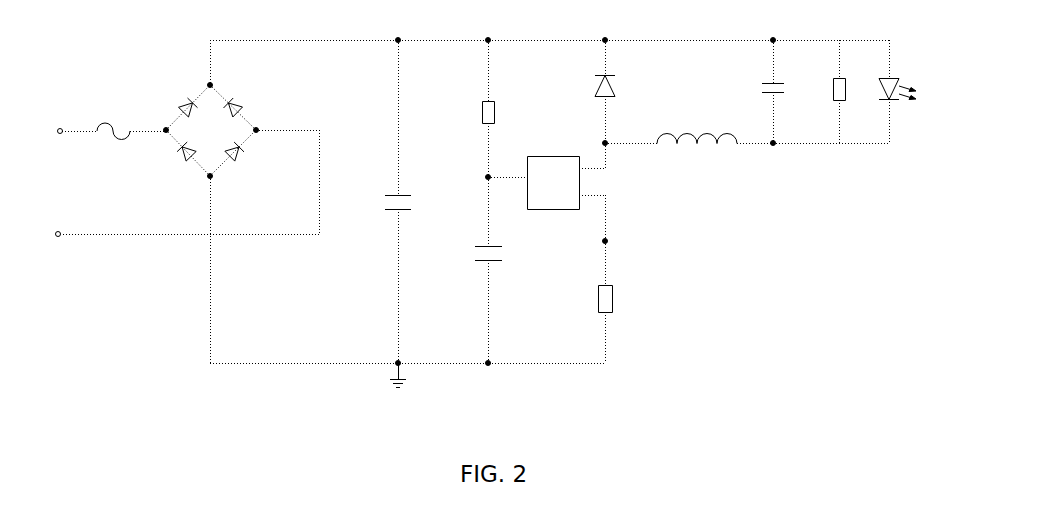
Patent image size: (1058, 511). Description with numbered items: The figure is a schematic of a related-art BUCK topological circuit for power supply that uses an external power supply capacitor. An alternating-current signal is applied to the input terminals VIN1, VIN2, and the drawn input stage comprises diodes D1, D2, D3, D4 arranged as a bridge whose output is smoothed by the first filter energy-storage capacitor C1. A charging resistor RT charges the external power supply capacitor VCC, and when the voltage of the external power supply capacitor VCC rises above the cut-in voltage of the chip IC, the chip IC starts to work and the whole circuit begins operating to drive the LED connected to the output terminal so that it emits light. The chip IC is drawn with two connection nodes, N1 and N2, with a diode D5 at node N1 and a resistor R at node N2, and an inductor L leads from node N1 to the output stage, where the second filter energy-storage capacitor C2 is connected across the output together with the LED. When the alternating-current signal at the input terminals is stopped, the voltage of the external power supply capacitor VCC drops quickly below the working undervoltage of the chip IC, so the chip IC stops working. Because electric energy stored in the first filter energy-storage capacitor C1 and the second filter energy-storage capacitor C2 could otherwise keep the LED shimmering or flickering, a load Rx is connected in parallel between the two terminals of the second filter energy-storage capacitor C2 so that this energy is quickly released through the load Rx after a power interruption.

The first input terminal with fuse VIN1 is at (105, 125).
The second input terminal VIN2 is at (60, 226).
The rectifier diode D1 is at (180, 105).
The rectifier diode D2 is at (179, 156).
The rectifier diode D3 is at (244, 105).
The rectifier diode D4 is at (244, 156).
The first filter energy-storage capacitor C1 is at (406, 201).
The charging resistor RT is at (504, 108).
The external power supply capacitor VCC is at (508, 270).
The chip IC is at (546, 192).
The freewheeling diode D5 is at (617, 91).
The first node N1 is at (615, 152).
The second node N2 is at (619, 242).
The current sensing resistor R is at (612, 302).
The inductor L is at (747, 148).
The second filter energy-storage capacitor C2 is at (785, 91).
The load Rx is at (852, 91).
The element LED is at (919, 91).